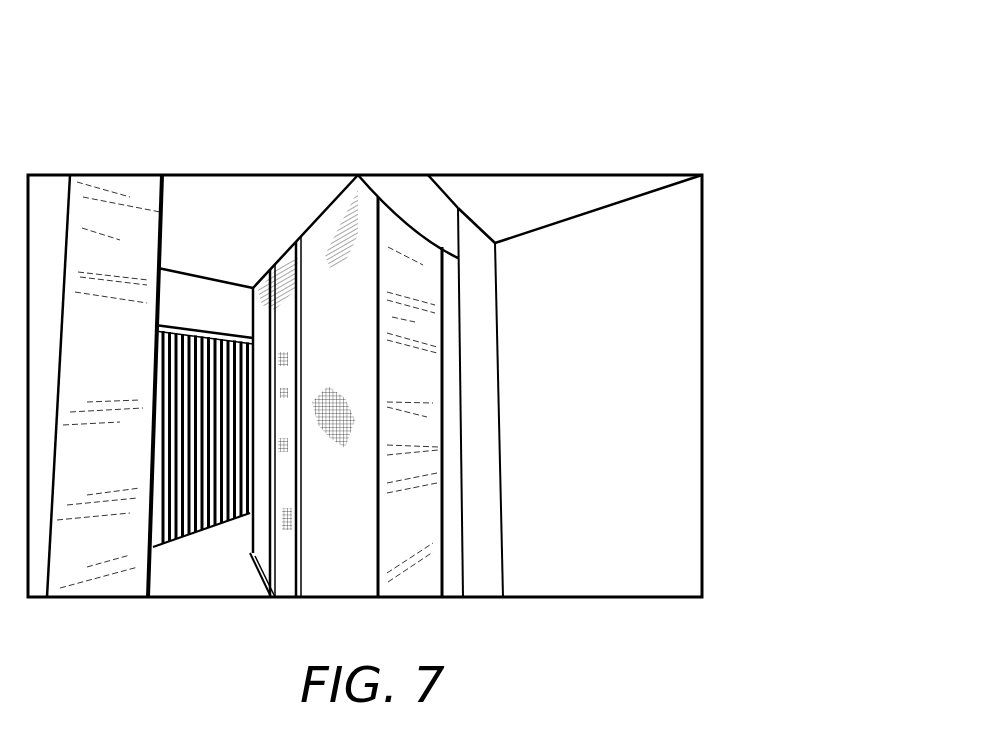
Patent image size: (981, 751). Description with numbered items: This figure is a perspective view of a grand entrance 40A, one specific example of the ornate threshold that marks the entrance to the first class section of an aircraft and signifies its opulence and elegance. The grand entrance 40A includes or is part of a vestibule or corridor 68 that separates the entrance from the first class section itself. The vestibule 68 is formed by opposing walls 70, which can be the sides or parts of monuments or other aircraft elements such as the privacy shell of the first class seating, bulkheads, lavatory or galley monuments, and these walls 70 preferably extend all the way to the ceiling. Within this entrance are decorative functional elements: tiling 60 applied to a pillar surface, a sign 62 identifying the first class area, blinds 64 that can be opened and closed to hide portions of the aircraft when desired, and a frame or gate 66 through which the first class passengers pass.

The grand entrance 40A is at (539, 116).
The tiling 60 is at (330, 217).
The sign 62 is at (452, 370).
The blinds 64 is at (221, 340).
The frame or gate 66 is at (427, 532).
The vestibule or corridor 68 is at (252, 198).
The opposing walls 70 is at (164, 208).